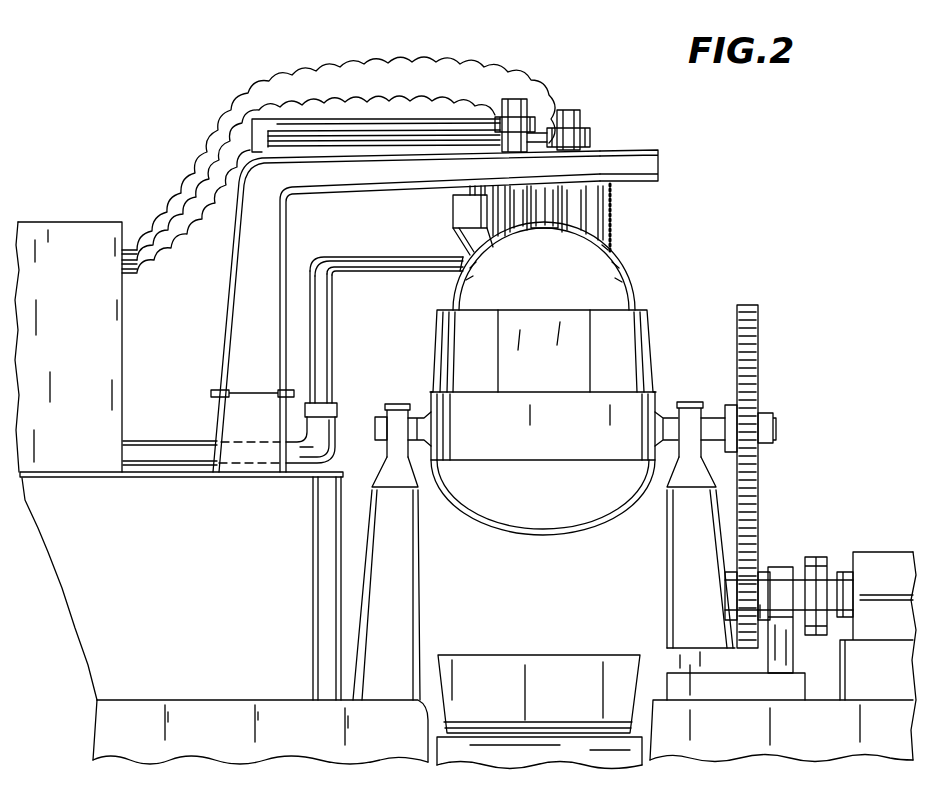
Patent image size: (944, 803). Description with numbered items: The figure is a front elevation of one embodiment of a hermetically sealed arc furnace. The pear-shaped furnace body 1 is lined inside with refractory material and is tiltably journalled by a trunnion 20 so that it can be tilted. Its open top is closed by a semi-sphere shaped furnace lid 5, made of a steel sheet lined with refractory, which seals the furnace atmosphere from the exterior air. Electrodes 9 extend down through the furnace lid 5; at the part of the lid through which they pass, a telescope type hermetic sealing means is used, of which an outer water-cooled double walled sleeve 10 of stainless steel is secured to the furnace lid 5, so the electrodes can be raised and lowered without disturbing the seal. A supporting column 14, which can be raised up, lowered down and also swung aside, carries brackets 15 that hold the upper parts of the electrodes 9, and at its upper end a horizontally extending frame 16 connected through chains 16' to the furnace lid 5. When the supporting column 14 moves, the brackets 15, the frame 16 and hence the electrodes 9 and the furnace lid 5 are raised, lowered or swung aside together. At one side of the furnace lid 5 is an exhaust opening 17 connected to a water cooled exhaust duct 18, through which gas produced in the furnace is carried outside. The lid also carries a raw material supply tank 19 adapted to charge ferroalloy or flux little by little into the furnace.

The furnace body 1 is at (650, 357).
The furnace lid 5 is at (613, 275).
The electrodes 9 is at (580, 113).
The outer water-cooled double walled sleeve 10 is at (612, 203).
The supporting column 14 is at (229, 332).
The brackets 15 is at (440, 137).
The horizontally extending frame 16 is at (653, 145).
The chains 16' is at (646, 213).
The exhaust opening 17 is at (453, 262).
The water cooled exhaust duct 18 is at (410, 272).
The raw material supply tank 19 is at (453, 210).
The trunnion 20 is at (377, 404).